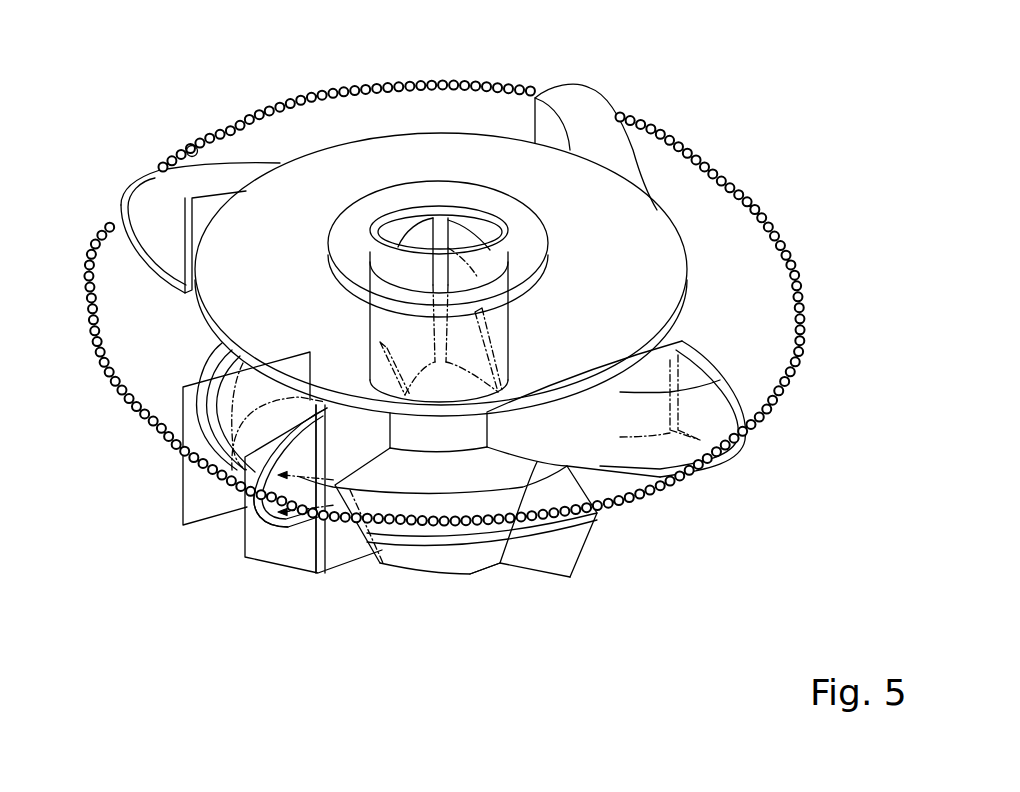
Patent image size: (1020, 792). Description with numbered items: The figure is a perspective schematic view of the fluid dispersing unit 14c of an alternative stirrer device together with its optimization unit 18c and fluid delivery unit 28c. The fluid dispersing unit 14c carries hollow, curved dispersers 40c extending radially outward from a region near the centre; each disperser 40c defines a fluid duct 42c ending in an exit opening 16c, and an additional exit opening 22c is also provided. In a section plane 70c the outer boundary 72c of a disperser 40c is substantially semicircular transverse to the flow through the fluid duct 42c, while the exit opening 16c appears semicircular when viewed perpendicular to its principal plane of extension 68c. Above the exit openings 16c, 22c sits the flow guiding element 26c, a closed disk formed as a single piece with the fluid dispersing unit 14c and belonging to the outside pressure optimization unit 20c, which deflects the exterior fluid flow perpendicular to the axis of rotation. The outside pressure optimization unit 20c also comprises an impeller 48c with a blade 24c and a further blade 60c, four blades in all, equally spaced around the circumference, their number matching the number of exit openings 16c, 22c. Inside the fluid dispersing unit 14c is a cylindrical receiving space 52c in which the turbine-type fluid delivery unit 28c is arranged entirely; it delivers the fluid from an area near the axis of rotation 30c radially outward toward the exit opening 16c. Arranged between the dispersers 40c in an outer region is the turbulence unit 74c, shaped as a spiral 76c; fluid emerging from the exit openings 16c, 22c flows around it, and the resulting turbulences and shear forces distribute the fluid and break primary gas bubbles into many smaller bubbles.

The fluid dispersing unit 14c is at (164, 346).
The exit opening 16c is at (308, 510).
The optimization unit 18c is at (163, 388).
The outside pressure optimization unit 20c is at (512, 581).
The additional exit opening 22c is at (740, 375).
The blade 24c is at (550, 547).
The flow guiding element 26c is at (292, 217).
The fluid delivery unit 28c is at (505, 282).
The axis of rotation 30c is at (474, 208).
The disperser 40c is at (227, 398).
The fluid duct 42c is at (437, 557).
The impeller 48c is at (472, 570).
The receiving space 52c is at (514, 315).
The further blade 60c is at (293, 507).
The principal plane of extension 68c is at (258, 528).
The section plane 70c is at (183, 498).
The outer boundary 72c is at (303, 553).
The turbulence unit 74c is at (248, 112).
The spiral 76c is at (192, 152).